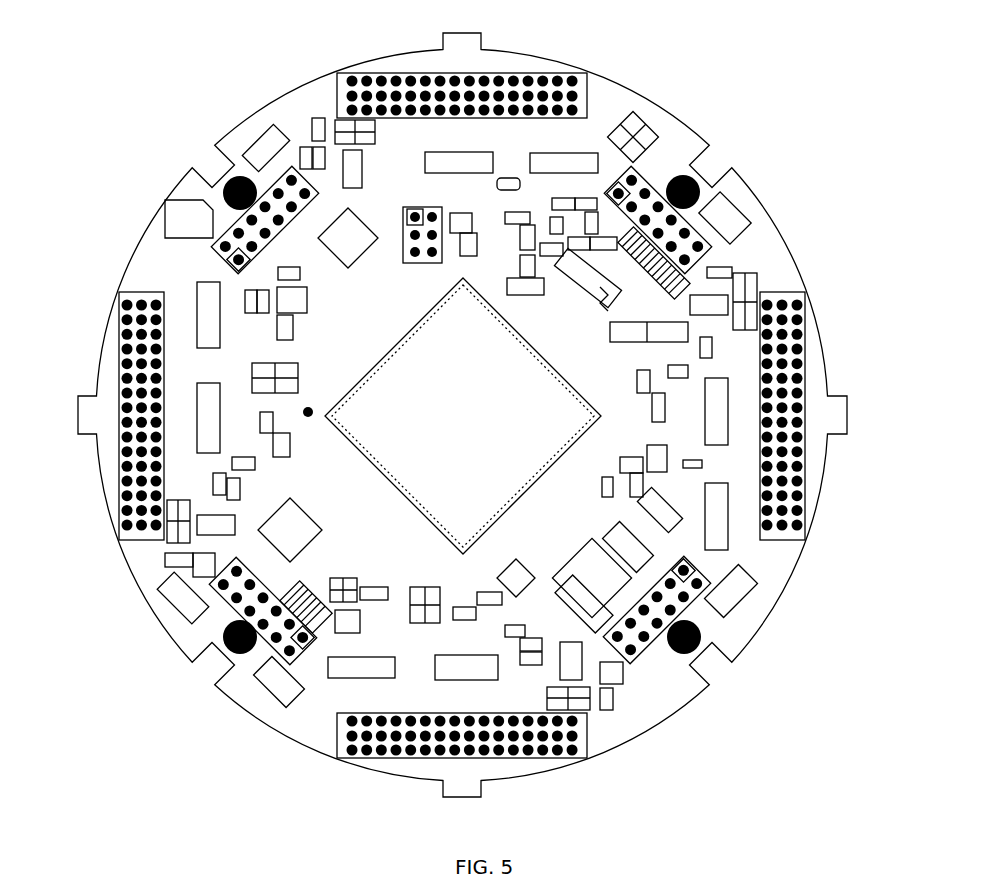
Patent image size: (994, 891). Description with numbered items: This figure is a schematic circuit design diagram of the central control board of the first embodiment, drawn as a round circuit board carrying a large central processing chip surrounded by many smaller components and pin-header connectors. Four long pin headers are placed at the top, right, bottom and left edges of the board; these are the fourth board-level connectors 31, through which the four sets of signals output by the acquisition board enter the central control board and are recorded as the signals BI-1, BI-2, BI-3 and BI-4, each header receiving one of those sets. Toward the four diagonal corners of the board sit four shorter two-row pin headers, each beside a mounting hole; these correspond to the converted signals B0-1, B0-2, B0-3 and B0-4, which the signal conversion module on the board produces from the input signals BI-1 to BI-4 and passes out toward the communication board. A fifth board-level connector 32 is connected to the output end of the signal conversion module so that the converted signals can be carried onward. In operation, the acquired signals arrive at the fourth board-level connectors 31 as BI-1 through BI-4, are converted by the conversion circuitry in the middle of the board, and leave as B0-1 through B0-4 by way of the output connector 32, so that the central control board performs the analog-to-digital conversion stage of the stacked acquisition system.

The signal BI-2 is at (573, 74).
The signal BI-4 is at (370, 735).
The signal BI-1 is at (803, 513).
The signal BI-3 is at (128, 348).
The fourth board-level connector 31 is at (140, 447).
The signal BO-1 B0-1 is at (233, 220).
The signal BO-2 B0-2 is at (230, 586).
The signal BO-3 B0-3 is at (687, 660).
The signal BO-4 B0-4 is at (678, 170).
The fifth board-level connector 32 is at (262, 673).